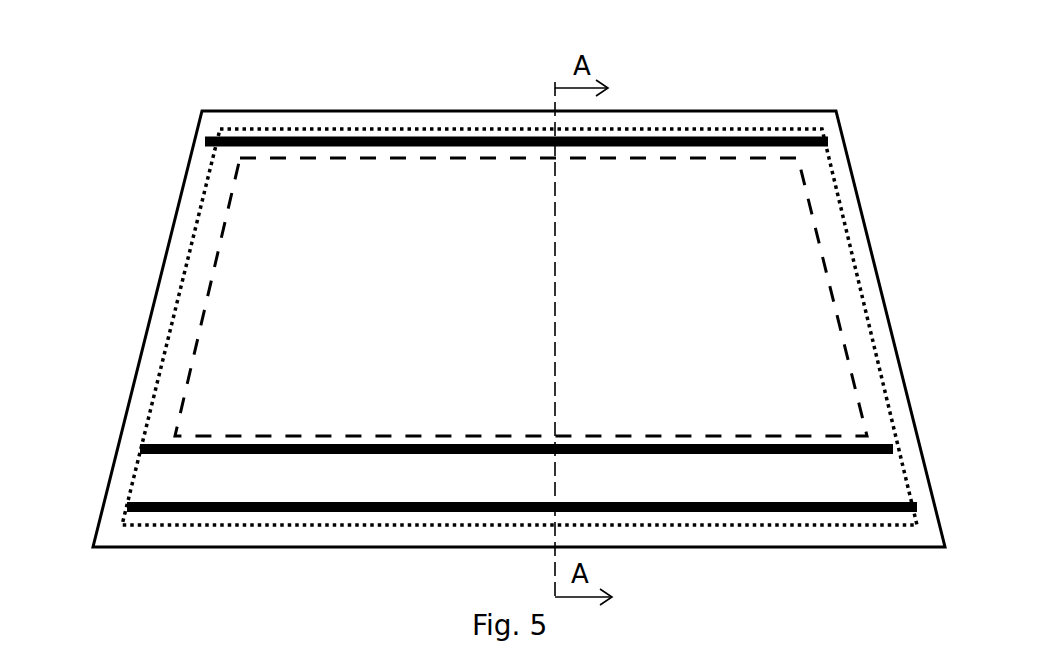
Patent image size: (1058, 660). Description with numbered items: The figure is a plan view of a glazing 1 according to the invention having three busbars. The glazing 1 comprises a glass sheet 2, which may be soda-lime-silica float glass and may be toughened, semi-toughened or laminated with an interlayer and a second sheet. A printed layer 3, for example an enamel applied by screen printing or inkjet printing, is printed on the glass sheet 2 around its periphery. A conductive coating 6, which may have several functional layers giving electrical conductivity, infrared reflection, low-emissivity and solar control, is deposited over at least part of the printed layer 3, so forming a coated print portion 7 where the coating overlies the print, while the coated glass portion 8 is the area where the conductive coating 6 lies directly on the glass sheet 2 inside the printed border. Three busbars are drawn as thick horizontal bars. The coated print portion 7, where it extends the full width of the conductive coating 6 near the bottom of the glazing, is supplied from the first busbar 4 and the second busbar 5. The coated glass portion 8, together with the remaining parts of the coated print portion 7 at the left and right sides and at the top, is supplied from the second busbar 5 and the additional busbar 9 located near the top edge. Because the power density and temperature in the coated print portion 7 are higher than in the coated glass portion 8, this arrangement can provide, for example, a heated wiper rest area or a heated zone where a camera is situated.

The glazing 1 is at (153, 70).
The glass sheet 2 is at (270, 111).
The printed layer 3 is at (360, 158).
The first busbar 4 is at (868, 507).
The second busbar 5 is at (875, 450).
The conductive coating 6 is at (206, 189).
The coated print portion 7 is at (306, 473).
The coated glass portion 8 is at (785, 352).
The additional busbar 9 is at (828, 141).